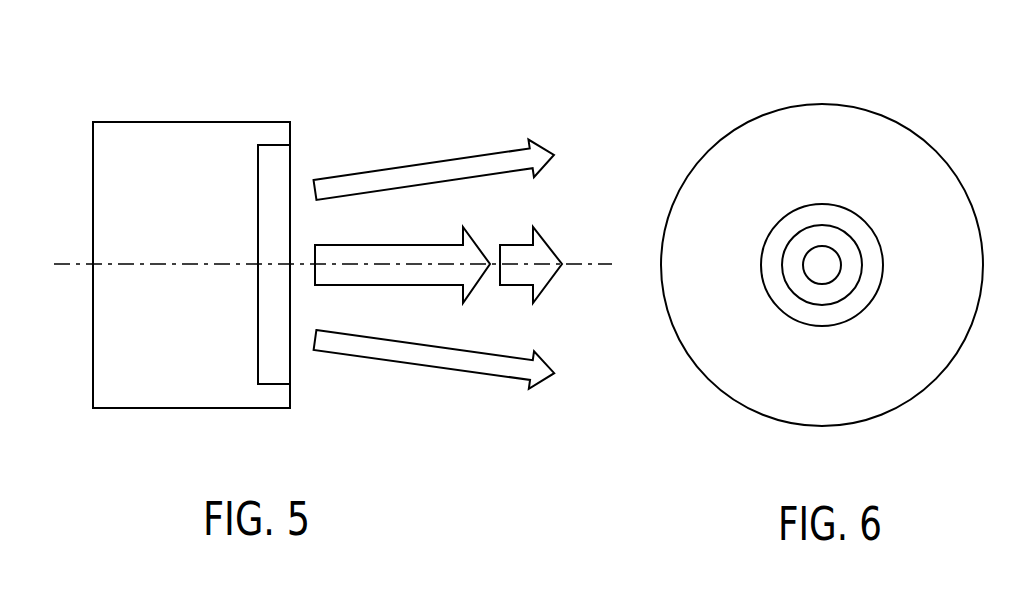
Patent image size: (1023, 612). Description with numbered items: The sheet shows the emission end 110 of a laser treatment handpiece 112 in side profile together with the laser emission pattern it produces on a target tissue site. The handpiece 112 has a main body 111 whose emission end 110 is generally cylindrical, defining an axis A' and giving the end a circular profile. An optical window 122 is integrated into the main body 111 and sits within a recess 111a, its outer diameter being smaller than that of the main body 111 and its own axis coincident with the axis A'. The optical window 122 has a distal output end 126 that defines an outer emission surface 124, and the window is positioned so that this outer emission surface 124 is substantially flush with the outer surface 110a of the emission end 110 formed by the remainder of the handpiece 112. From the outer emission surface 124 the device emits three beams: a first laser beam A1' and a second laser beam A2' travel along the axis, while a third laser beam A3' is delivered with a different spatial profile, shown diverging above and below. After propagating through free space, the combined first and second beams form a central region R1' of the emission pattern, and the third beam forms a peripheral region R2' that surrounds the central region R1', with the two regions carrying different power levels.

In FIG. 5, the emission end 110 is at (290, 128).
In FIG. 5, the outer surface 110a is at (293, 138).
In FIG. 5, the main body 111 is at (190, 148).
In FIG. 5, the recess 111a is at (273, 385).
In FIG. 5, the handpiece 112 is at (260, 235).
In FIG. 5, the optical window 122 is at (280, 368).
In FIG. 5, the outer emission surface 124 is at (292, 163).
In FIG. 5, the output end 126 is at (292, 358).
In FIG. 5, the axis A' is at (326, 307).
In FIG. 5, the first laser beam A1' is at (559, 248).
In FIG. 5, the second laser beam A2' is at (402, 264).
In FIG. 5, the third laser beam A3' is at (434, 263).
In FIG. 6, the central region R1' is at (858, 196).
In FIG. 6, the peripheral region R2' is at (822, 301).